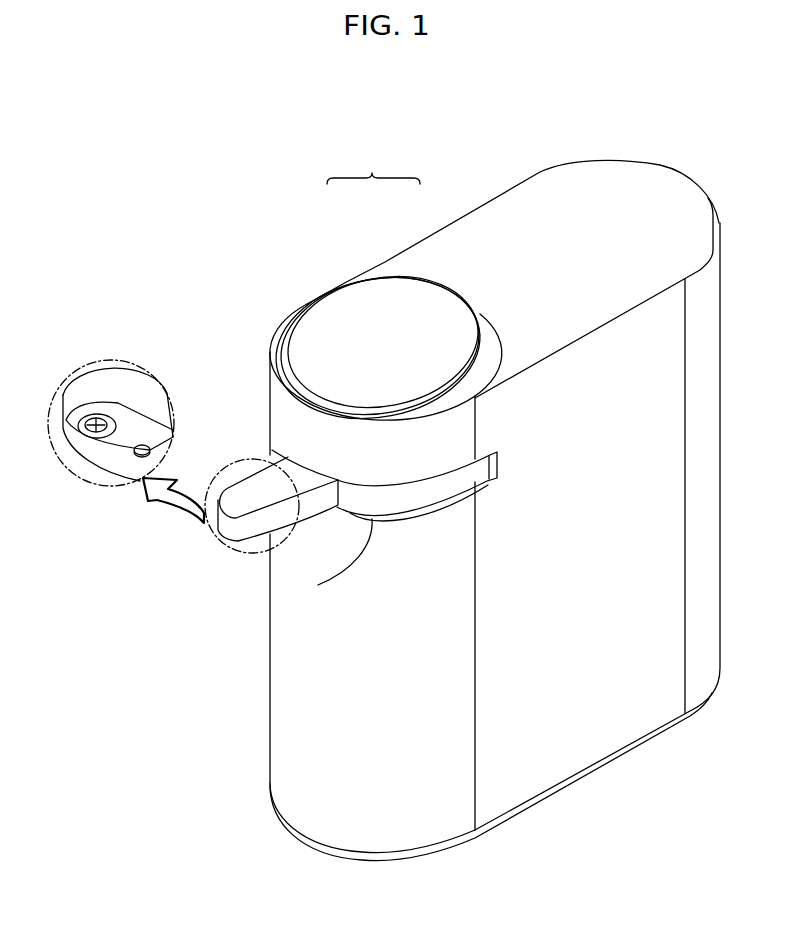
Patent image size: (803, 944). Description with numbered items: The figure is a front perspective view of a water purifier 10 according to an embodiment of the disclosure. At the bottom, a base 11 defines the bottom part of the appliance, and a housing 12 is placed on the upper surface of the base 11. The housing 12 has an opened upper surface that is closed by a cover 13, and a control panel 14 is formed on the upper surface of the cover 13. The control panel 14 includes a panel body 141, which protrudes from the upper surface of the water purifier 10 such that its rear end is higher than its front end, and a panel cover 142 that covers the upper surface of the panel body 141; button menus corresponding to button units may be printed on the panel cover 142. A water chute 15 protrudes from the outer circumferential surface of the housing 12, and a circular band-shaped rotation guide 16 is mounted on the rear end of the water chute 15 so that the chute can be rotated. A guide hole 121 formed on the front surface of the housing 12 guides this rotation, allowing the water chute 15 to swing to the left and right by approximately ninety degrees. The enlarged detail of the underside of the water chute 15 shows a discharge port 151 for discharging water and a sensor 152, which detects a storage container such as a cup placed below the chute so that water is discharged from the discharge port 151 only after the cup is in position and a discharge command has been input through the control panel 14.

The water purifier 10 is at (602, 147).
The base 11 is at (520, 812).
The housing 12 is at (548, 760).
The cover 13 is at (500, 228).
The control panel 14 is at (373, 168).
The panel body 141 is at (483, 326).
The panel cover 142 is at (350, 310).
The water chute 15 is at (244, 480).
The discharge port 151 is at (100, 436).
The sensor 152 is at (151, 450).
The rotation guide 16 is at (427, 502).
The guide hole 121 is at (320, 584).